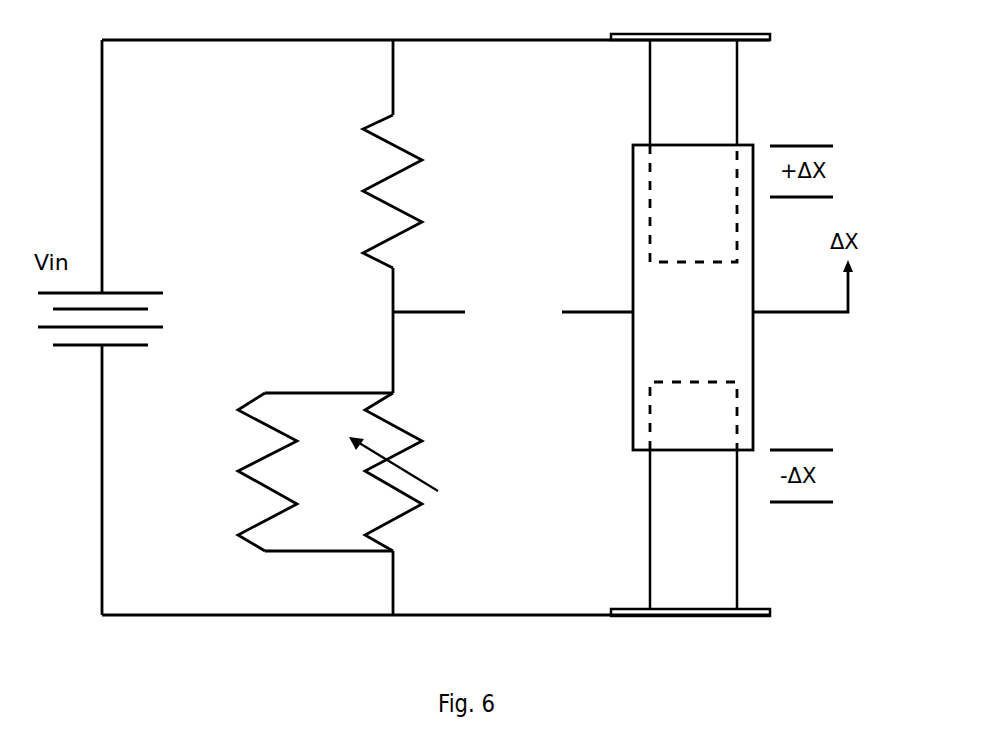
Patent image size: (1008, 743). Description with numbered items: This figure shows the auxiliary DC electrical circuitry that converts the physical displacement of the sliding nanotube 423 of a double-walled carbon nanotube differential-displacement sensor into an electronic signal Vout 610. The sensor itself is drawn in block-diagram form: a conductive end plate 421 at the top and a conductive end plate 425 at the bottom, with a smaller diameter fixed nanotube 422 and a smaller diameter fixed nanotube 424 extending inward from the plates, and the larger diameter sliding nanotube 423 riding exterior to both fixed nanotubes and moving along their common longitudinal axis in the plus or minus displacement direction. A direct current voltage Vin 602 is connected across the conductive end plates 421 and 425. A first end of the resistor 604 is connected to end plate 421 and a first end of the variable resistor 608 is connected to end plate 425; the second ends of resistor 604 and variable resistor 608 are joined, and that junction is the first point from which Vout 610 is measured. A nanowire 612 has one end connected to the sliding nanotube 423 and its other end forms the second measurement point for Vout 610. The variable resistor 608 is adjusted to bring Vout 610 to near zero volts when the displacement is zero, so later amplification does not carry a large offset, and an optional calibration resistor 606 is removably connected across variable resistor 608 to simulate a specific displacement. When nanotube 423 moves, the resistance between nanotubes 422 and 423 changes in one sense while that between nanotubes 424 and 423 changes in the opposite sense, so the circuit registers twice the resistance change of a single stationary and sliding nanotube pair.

The DC voltage Vin 602 is at (118, 293).
The resistor 604 is at (362, 129).
The calibration resistor 606 is at (237, 471).
The variable resistor 608 is at (424, 442).
The Vout 610 is at (487, 308).
The nanowire 612 is at (588, 320).
The conductive end plate 421 is at (772, 41).
The smaller diameter fixed nanotube 422 is at (738, 105).
The larger diameter sliding nanotube 423 is at (755, 365).
The smaller diameter fixed nanotube 424 is at (739, 508).
The conductive end plate 425 is at (772, 611).